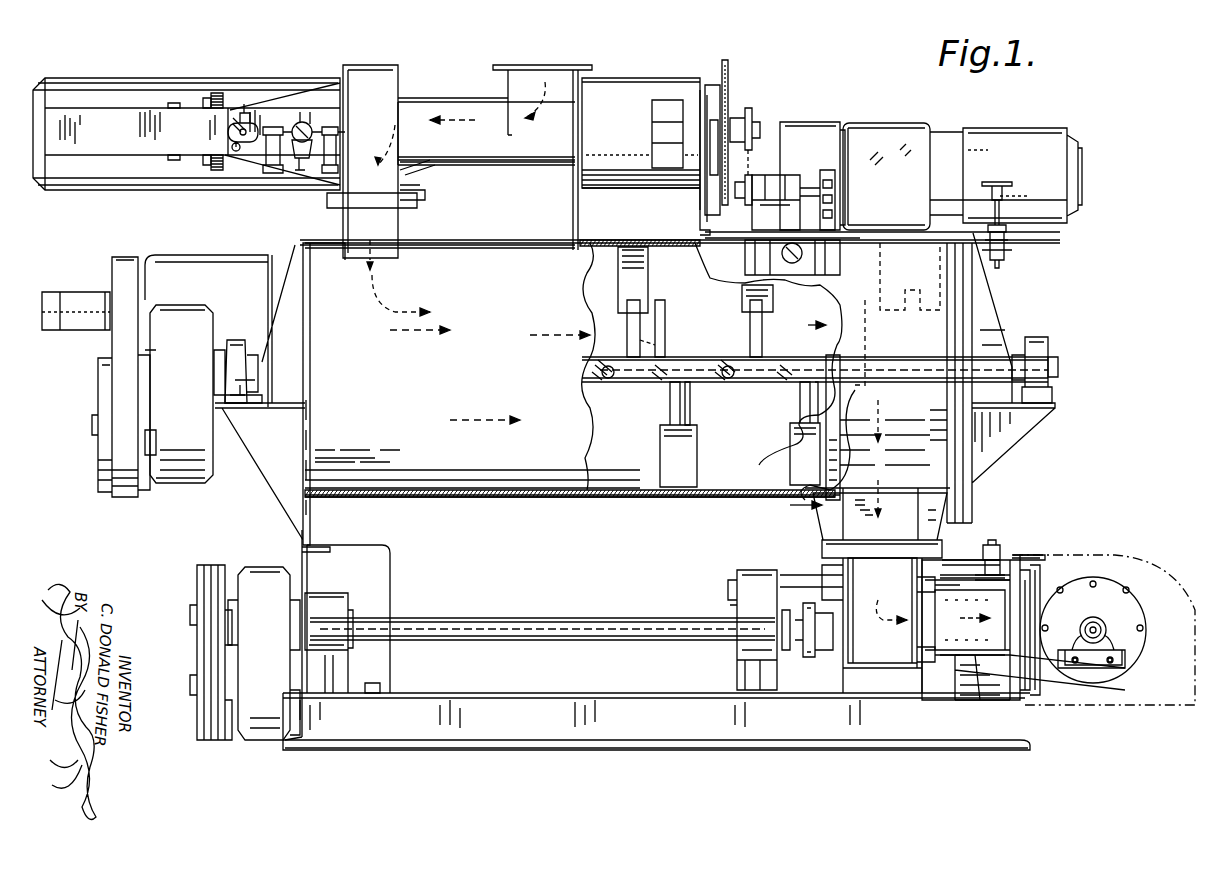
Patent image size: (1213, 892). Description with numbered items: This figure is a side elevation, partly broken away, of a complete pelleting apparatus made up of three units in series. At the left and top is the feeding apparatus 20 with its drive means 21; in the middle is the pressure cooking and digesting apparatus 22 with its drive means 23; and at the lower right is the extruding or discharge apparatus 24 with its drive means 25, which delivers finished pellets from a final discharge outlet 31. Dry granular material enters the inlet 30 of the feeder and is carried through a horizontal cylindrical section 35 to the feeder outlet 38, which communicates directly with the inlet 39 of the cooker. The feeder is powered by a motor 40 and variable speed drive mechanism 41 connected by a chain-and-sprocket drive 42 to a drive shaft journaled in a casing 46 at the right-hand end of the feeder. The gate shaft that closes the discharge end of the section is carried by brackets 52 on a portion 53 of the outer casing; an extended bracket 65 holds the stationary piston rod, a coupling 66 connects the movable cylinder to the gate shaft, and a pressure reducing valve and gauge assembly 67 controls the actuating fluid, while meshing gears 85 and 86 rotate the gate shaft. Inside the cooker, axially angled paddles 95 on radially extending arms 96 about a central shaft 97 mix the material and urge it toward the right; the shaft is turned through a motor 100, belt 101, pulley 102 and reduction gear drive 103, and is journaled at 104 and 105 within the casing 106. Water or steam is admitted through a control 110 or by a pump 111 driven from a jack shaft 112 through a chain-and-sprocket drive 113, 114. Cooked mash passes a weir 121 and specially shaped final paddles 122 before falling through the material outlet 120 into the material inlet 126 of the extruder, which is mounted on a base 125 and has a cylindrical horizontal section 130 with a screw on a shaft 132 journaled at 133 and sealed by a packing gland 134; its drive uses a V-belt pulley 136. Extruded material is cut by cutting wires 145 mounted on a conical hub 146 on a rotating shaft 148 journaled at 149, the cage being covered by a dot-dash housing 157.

The feeding apparatus 20 is at (630, 72).
The drive means 21 is at (900, 118).
The cooking and digesting apparatus 22 is at (490, 487).
The drive means 23 is at (160, 495).
The extruding or discharge apparatus 24 is at (992, 545).
The drive means 25 is at (215, 750).
The inlet 30 is at (585, 38).
The final discharge outlet 31 is at (1105, 700).
The horizontal cylindrical section 35 is at (455, 98).
The outlet 38 is at (400, 182).
The inlet 39 is at (398, 242).
The motor 40 is at (1012, 148).
The variable speed drive mechanism 41 is at (800, 122).
The chain-and-sprocket drive 42 is at (728, 62).
The casing 46 is at (625, 152).
The brackets 52 is at (285, 100).
The portion of outer casing 53 is at (365, 65).
The extended bracket 65 is at (100, 112).
The coupling 66 is at (174, 103).
The pressure reducing valve and gauge assembly 67 is at (302, 172).
The gear 85 is at (205, 98).
The gear 86 is at (218, 93).
The paddles 95 is at (630, 262).
The arms 96 is at (640, 325).
The shaft 97 is at (1058, 365).
The motor 100 is at (205, 270).
The belt 101 is at (120, 340).
The pulley 102 is at (97, 455).
The reduction gear drive 103 is at (200, 483).
The journal 104 is at (240, 385).
The journal 105 is at (1037, 337).
The casing 106 is at (492, 380).
The control 110 is at (798, 262).
The pump 111 is at (832, 215).
The jack shaft 112 is at (775, 180).
The chain-and-sprocket drive sprocket 113 is at (752, 110).
The chain-and-sprocket drive sprocket 114 is at (752, 178).
The material outlet 120 is at (900, 505).
The weir 121 is at (835, 420).
The paddles 122 is at (933, 290).
The base 125 is at (520, 720).
The material inlet 126 is at (880, 556).
The horizontal section 130 is at (905, 668).
The shaft 132 is at (555, 615).
The journal / motor 133 is at (372, 580).
The packing gland / gear reducer unit 134 is at (265, 740).
The pulley 136 is at (197, 725).
The cutting wires 145 is at (1125, 590).
The conical hub 146 is at (1075, 590).
The rotating shaft 148 is at (1103, 625).
The journal 149 is at (1080, 650).
The housing 157 is at (1150, 710).